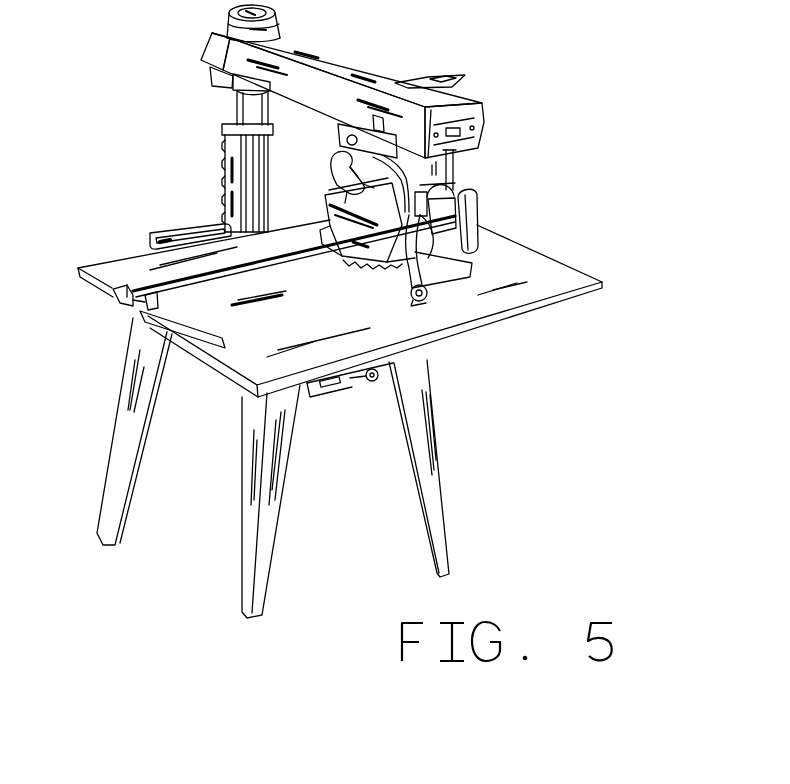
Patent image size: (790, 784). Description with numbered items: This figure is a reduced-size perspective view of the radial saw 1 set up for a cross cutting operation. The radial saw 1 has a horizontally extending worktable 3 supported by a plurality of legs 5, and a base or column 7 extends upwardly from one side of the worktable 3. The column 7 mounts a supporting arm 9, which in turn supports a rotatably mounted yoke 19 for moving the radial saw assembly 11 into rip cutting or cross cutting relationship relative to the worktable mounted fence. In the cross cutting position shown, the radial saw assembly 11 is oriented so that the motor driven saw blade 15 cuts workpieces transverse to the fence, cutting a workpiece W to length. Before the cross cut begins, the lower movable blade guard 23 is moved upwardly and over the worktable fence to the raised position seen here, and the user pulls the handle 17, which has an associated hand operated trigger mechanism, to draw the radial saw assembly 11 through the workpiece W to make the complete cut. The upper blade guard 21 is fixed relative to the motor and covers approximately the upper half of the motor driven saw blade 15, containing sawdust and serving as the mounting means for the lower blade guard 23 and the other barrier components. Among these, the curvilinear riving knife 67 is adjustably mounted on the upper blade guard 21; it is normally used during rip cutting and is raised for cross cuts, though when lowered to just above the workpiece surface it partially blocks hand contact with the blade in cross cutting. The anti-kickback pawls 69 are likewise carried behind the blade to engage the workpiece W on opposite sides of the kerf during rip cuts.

The radial saw 1 is at (512, 108).
The worktable 3 is at (552, 273).
The legs 5 is at (117, 488).
The base or column 7 is at (232, 150).
The supporting arm 9 is at (332, 64).
The radial saw assembly 11 is at (350, 266).
The motor driven saw blade 15 is at (322, 263).
The handle 17 is at (468, 206).
The yoke 19 is at (452, 168).
The upper blade guard 21 is at (331, 184).
The lower movable blade guard 23 is at (331, 224).
The riving knife 67 is at (409, 295).
The anti-kickback pawls 69 is at (428, 305).
The workpiece W is at (142, 313).